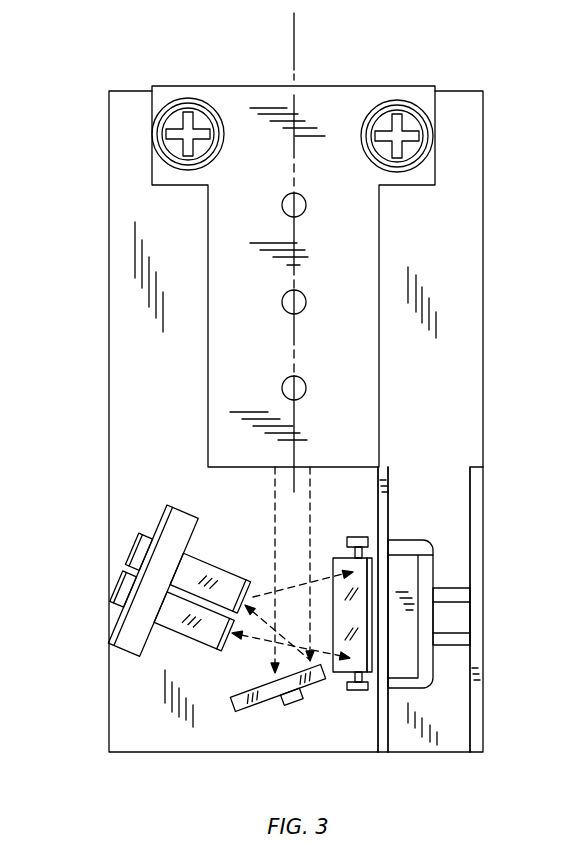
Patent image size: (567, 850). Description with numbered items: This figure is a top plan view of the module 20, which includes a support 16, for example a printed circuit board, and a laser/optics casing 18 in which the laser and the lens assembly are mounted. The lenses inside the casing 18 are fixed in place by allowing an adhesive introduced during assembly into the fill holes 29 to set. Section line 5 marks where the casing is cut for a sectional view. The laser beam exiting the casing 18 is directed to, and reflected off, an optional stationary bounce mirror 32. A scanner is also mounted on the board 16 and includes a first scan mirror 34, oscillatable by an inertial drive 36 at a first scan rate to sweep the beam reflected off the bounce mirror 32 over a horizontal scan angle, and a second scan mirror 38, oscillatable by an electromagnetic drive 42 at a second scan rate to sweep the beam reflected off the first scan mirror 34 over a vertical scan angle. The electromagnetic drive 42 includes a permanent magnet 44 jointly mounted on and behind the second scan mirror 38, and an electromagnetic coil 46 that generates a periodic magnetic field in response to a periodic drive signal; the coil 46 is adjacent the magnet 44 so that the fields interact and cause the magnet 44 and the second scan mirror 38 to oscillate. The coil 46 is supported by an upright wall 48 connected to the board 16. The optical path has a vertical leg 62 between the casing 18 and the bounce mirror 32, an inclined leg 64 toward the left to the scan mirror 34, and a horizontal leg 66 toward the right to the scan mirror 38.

The section line 5- 5 is at (284, 27).
The support 16 is at (472, 240).
The laser/optics casing 18 is at (320, 91).
The module 20 is at (295, 382).
The fill holes 29 is at (282, 302).
The stationary bounce mirror 32 is at (270, 702).
The first scan mirror 34 is at (256, 655).
The inertial drive 36 is at (124, 627).
The second scan mirror 38 is at (335, 673).
The electromagnetic drive 42 is at (440, 653).
The permanent magnet 44 is at (378, 655).
The electromagnetic coil 46 is at (400, 545).
The upright wall 48 is at (476, 506).
The vertical leg 62 is at (290, 534).
The inclined leg 64 is at (234, 637).
The horizontal leg 66 is at (320, 588).